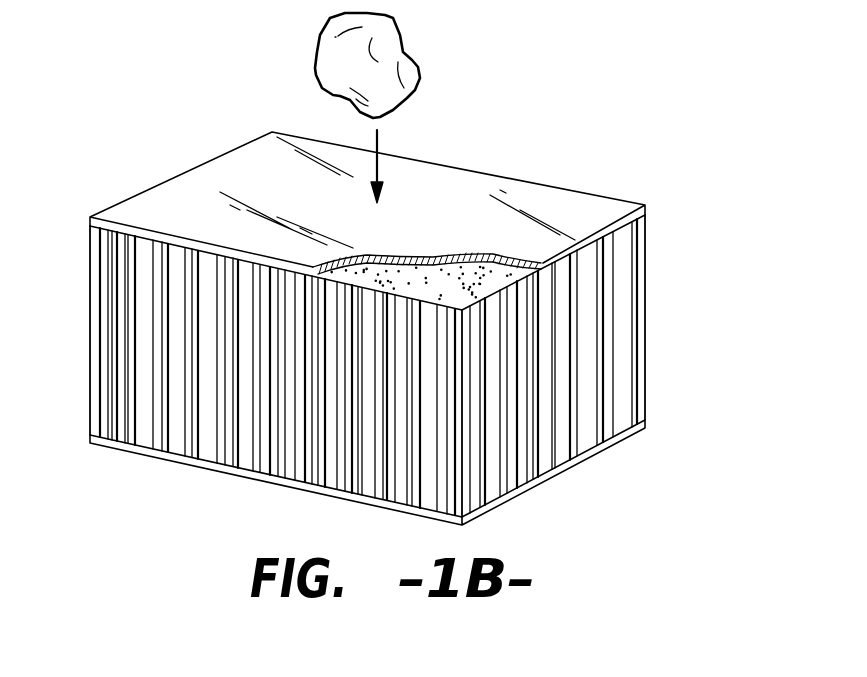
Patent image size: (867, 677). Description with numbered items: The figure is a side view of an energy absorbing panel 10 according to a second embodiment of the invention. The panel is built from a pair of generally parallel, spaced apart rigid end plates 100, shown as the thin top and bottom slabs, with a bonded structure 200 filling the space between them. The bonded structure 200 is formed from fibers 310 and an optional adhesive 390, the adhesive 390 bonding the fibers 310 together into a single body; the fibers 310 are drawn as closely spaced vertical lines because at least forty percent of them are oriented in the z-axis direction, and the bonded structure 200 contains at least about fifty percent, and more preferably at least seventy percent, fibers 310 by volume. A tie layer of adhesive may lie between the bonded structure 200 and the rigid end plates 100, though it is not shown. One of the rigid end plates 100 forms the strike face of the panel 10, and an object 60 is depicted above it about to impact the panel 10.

The energy absorbing panel 10 is at (548, 109).
The object 60 is at (403, 58).
The rigid end plates 100 is at (537, 198).
The bonded structure 200 is at (416, 369).
The fibers 310 is at (253, 440).
The adhesive 390 is at (168, 430).